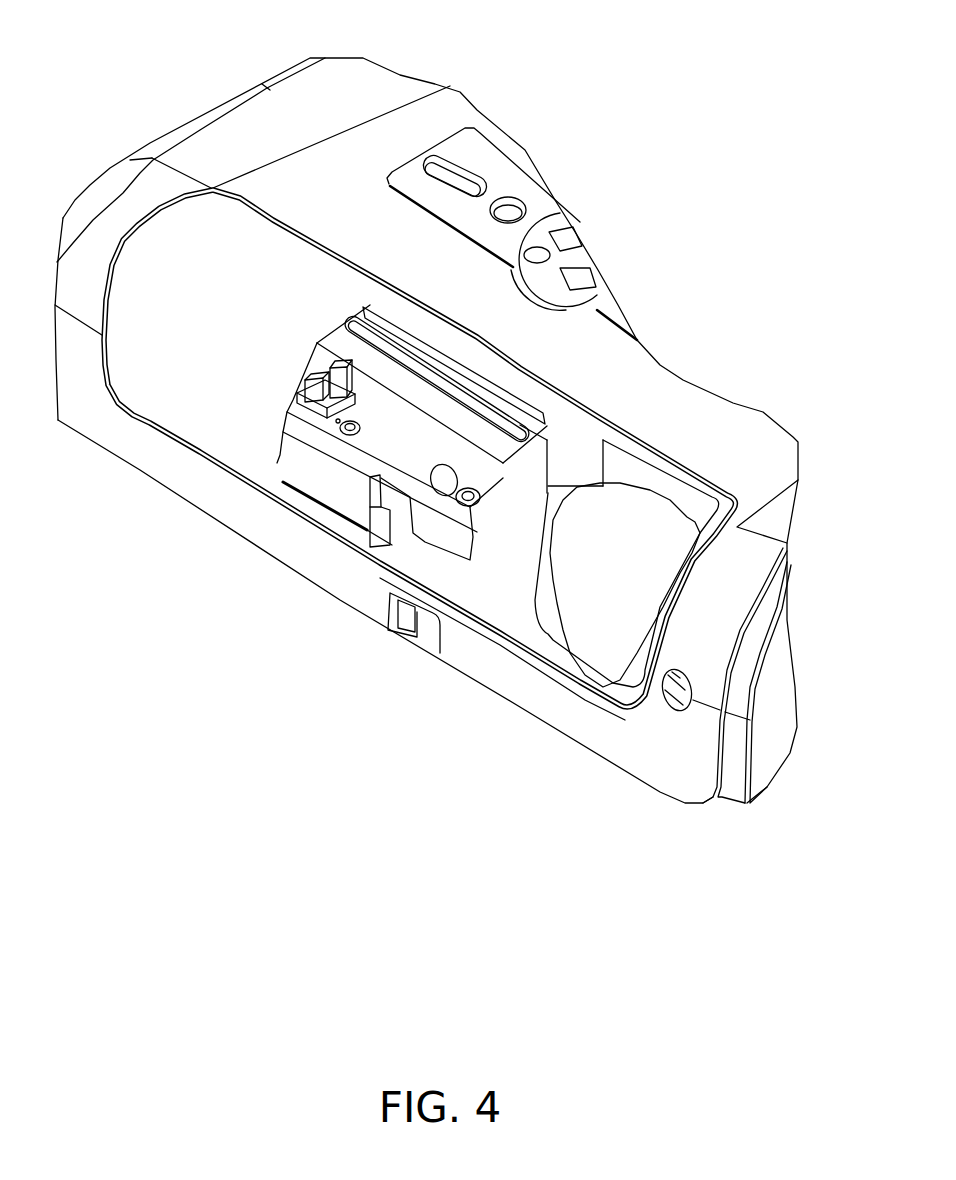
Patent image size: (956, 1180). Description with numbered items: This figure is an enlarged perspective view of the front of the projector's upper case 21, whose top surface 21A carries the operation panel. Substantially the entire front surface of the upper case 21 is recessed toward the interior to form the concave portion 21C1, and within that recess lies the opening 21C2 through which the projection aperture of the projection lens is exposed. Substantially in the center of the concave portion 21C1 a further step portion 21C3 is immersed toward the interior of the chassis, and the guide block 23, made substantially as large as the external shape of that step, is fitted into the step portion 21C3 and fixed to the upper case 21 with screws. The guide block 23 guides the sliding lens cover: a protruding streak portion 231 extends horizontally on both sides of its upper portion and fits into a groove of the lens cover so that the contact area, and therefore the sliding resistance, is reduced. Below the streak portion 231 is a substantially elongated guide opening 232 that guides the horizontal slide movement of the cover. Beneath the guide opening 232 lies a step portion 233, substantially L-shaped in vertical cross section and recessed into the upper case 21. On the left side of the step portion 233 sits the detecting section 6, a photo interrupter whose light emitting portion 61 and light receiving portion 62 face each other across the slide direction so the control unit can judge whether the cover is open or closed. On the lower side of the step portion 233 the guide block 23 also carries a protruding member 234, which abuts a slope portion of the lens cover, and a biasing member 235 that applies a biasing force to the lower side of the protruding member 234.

The upper case 21 is at (730, 595).
The top surface 21A is at (442, 112).
The concave portion 21C1 is at (167, 438).
The opening 21C2 is at (653, 487).
The step portion 21C3 is at (480, 370).
The guide block 23 is at (457, 578).
The protruding streak portion 231 is at (372, 300).
The guide opening 232 is at (427, 360).
The step portion 233 is at (373, 443).
The protruding member 234 is at (372, 545).
The biasing member 235 is at (403, 495).
The detecting section 6 is at (284, 361).
The light emitting portion 61 is at (330, 378).
The light receiving portion 62 is at (310, 393).